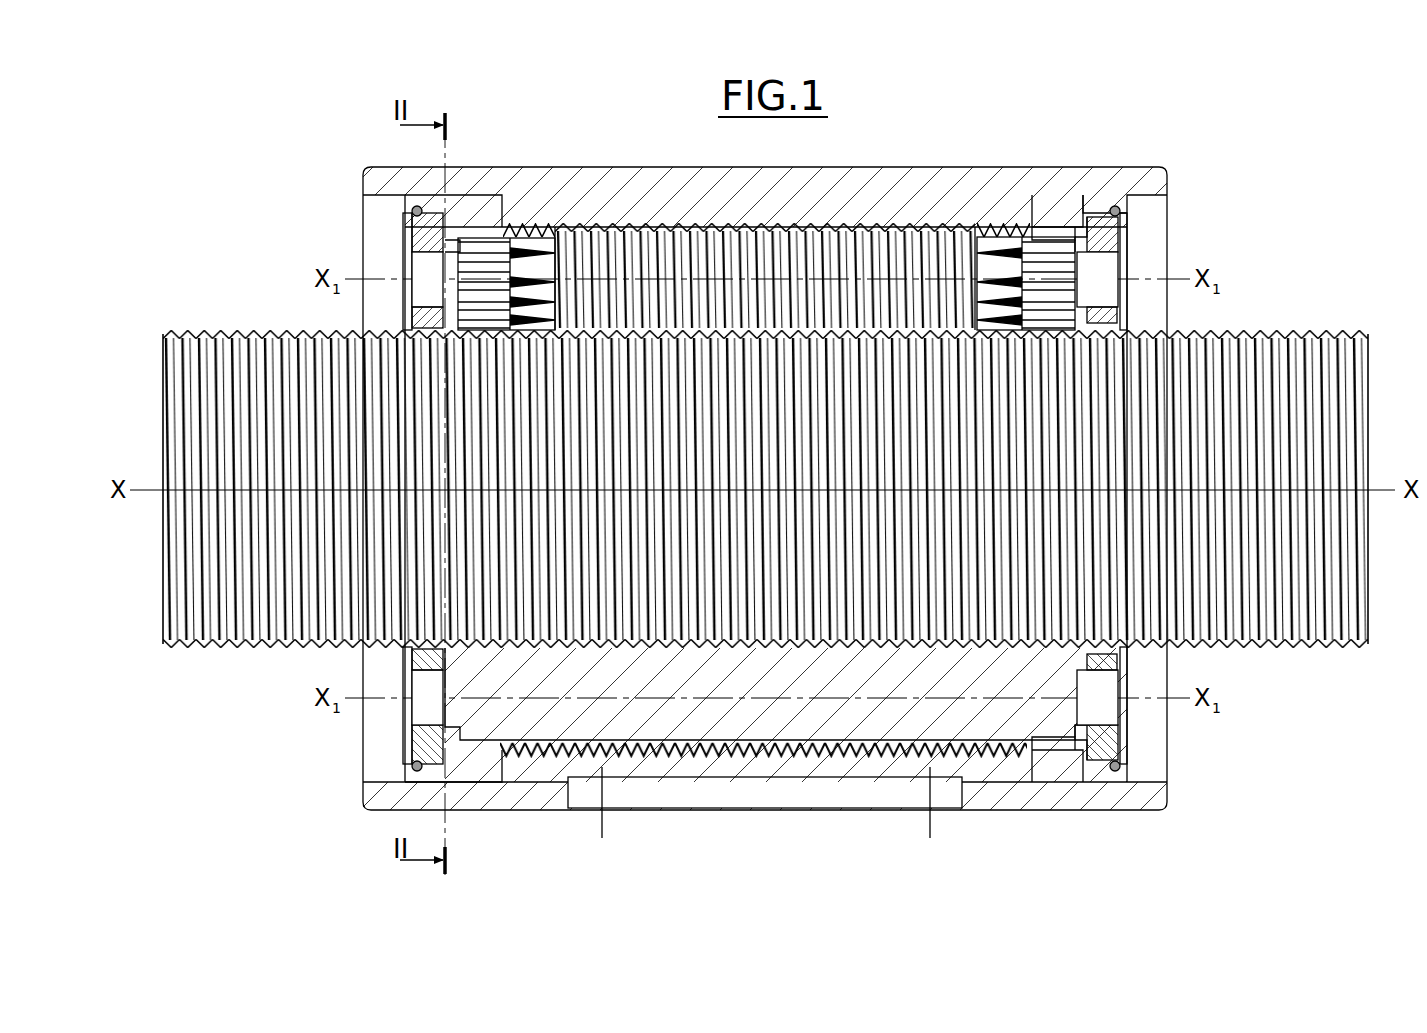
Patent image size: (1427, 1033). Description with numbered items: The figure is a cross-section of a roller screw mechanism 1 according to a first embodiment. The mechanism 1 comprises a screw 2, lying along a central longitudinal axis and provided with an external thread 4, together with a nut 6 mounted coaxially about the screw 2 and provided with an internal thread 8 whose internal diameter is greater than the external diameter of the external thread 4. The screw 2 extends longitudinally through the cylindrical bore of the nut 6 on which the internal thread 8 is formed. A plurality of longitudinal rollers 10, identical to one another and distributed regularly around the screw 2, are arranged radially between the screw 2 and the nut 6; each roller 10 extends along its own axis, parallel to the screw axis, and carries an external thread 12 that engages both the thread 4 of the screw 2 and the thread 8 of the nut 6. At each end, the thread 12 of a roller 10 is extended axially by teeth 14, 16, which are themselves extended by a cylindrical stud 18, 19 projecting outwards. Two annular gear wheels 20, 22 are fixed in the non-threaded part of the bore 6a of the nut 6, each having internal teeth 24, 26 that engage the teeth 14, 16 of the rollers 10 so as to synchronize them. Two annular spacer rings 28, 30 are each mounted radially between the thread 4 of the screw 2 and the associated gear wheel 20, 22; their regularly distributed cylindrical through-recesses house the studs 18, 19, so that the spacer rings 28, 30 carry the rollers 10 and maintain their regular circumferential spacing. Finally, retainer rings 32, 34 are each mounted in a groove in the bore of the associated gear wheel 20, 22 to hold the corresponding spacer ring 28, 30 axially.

The roller screw mechanism 1 is at (1270, 165).
The screw 2 is at (1380, 360).
The external thread 4 is at (1368, 410).
The nut 6 is at (1147, 178).
The bore 6a is at (1113, 200).
The internal thread 8 is at (1012, 228).
The longitudinal rollers 10 is at (1132, 263).
The external thread 12 is at (893, 262).
The teeth 14 is at (525, 265).
The teeth 16 is at (997, 263).
The cylindrical stud 18 is at (437, 262).
The cylindrical stud 19 is at (1103, 265).
The annular gear wheel 20 is at (478, 210).
The annular gear wheel 22 is at (1053, 208).
The internal teeth 24 is at (492, 233).
The internal teeth 26 is at (1075, 237).
The annular spacer ring 28 is at (425, 233).
The annular spacer ring 30 is at (1102, 237).
The retainer ring 32 is at (417, 211).
The retainer ring 34 is at (1117, 210).